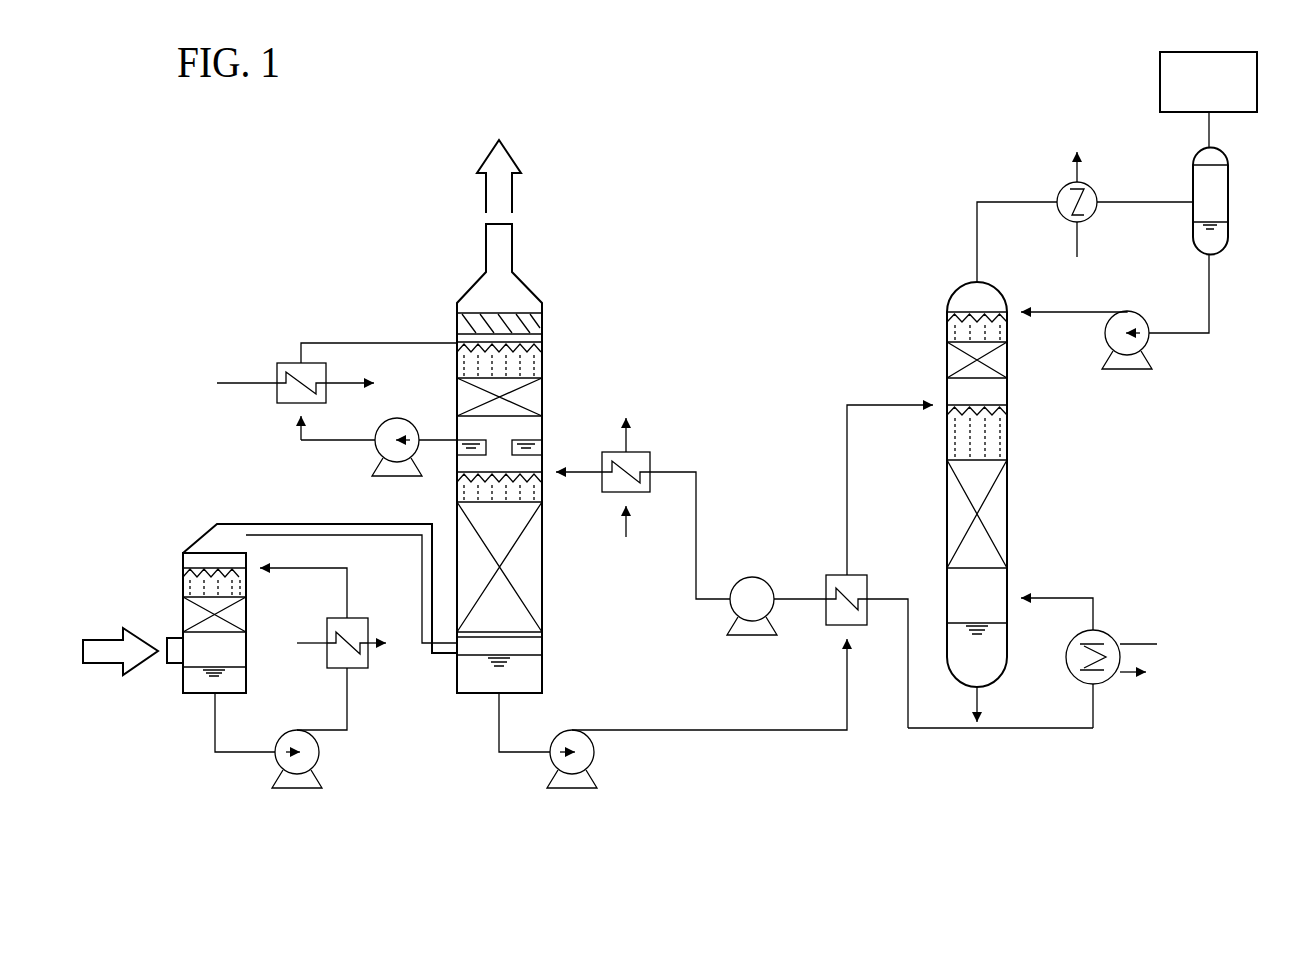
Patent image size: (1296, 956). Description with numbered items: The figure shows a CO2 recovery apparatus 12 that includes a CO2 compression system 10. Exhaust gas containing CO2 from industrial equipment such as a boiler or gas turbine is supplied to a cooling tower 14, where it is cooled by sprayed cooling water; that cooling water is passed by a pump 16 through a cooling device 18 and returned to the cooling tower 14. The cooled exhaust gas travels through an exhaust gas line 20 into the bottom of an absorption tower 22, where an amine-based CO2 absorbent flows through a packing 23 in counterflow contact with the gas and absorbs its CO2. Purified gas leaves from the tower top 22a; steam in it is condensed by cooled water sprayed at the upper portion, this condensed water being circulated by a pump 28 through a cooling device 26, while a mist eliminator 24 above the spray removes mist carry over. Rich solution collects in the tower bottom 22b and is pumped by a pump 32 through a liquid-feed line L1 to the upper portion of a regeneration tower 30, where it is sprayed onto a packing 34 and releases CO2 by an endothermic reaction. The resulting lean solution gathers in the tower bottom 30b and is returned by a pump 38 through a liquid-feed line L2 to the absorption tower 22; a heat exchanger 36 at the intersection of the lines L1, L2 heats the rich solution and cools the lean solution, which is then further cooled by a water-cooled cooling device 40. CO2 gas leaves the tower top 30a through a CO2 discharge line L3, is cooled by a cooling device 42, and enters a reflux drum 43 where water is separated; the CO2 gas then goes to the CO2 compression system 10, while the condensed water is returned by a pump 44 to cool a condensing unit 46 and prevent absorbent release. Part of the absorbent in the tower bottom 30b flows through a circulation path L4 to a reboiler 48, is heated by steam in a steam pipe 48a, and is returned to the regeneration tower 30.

The CO2 compression system 10 is at (1160, 86).
The CO2 recovery apparatus 12 is at (678, 112).
The cooling tower 14 is at (200, 548).
The pump 16 is at (320, 752).
The cooling device 18 is at (368, 660).
The exhaust gas line 20 is at (257, 522).
The absorption tower 22 is at (612, 292).
The tower top 22a is at (512, 250).
The tower bottom 22b is at (530, 676).
The packing 23 is at (542, 572).
The mist eliminator 24 is at (542, 325).
The cooling device 26 is at (287, 362).
The pump 28 is at (375, 452).
The regeneration tower 30 is at (1028, 462).
The tower top 30a is at (956, 283).
The tower bottom 30b is at (990, 678).
The pump 32 is at (550, 775).
The packing 34 is at (1010, 518).
The heat exchanger 36 is at (837, 575).
The pump 38 is at (752, 577).
The water-cooled cooling device 40 is at (641, 452).
The cooling device 42 is at (1088, 178).
The reflux drum 43 is at (1228, 200).
The pump 44 is at (1150, 355).
The condensing unit 46 is at (1010, 360).
The reboiler 48 is at (1105, 632).
The steam pipe 48a is at (1160, 642).
The liquid-feed line L1 is at (709, 735).
The liquid-feed line L2 is at (903, 710).
The CO2 discharge line L3 is at (993, 200).
The circulation path L4 is at (1040, 730).